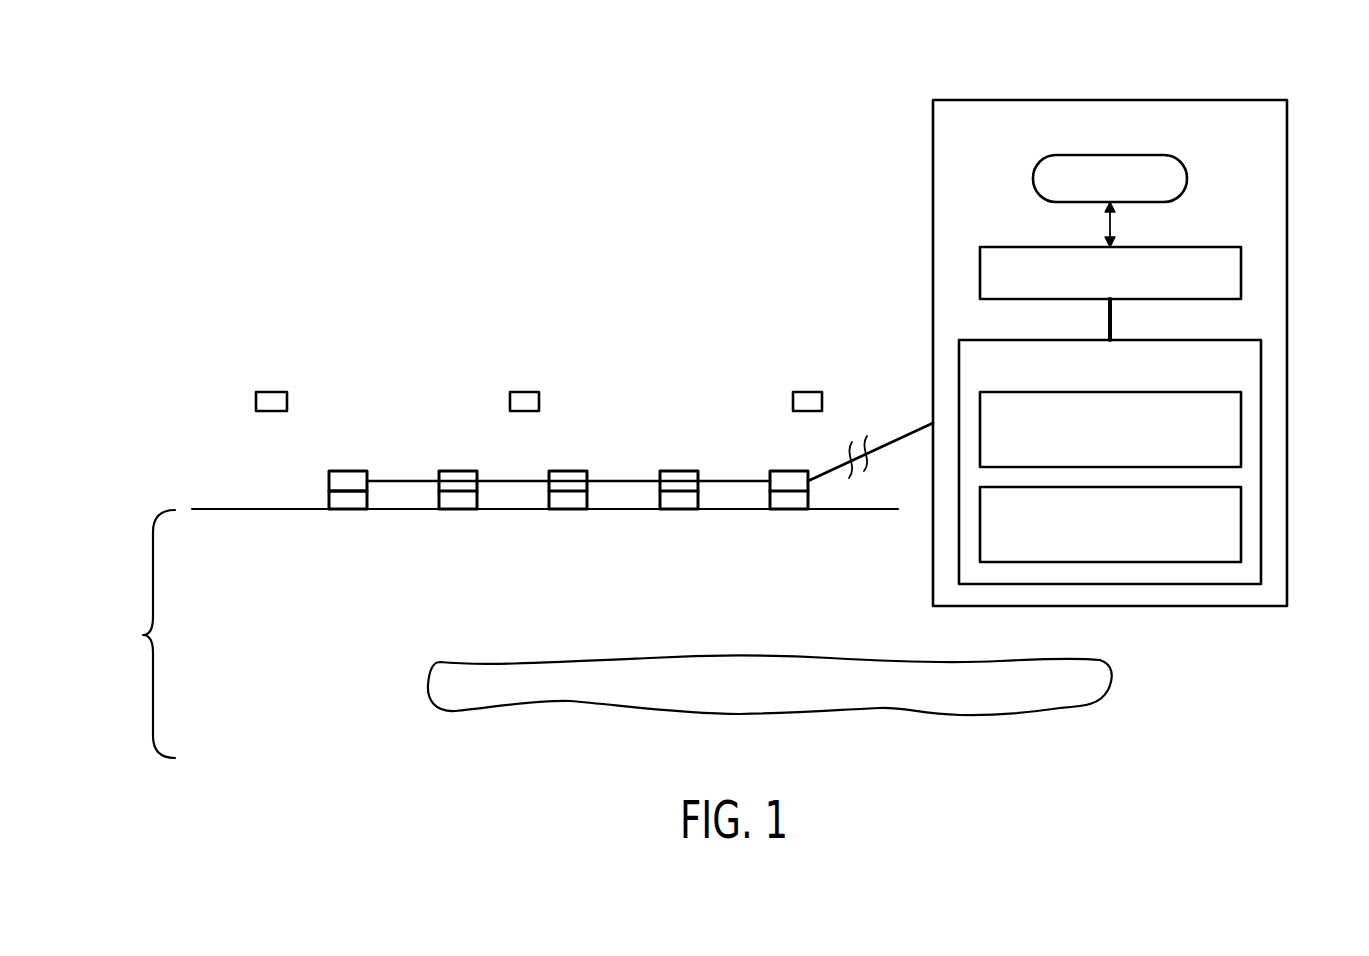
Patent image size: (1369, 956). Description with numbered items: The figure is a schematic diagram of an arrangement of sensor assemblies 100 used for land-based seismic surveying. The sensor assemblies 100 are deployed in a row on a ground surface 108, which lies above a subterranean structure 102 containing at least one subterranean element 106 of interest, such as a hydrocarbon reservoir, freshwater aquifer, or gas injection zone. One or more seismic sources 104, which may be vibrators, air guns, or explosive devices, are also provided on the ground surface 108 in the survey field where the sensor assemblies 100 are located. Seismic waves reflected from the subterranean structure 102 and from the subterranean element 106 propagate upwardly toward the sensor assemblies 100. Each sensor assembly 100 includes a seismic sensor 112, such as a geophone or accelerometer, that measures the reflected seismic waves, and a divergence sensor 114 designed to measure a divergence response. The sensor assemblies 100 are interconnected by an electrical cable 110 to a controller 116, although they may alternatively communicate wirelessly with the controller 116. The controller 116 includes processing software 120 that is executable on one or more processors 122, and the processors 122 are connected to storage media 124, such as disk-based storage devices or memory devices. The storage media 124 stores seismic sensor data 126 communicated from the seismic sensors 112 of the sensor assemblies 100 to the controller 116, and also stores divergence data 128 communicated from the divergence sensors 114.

The sensor assembly 100 is at (457, 468).
The subterranean structure 102 is at (143, 635).
The seismic source 104 is at (271, 391).
The subterranean element of interest 106 is at (774, 698).
The ground surface 108 is at (853, 508).
The electrical cable 110 is at (403, 481).
The seismic sensor 112 is at (329, 480).
The divergence sensor 114 is at (329, 500).
The controller 116 is at (1260, 100).
The processing software 120 is at (1187, 170).
The processor 122 is at (1225, 247).
The storage media 124 is at (1242, 340).
The seismic sensor data 126 is at (1241, 427).
The divergence data 128 is at (1241, 508).